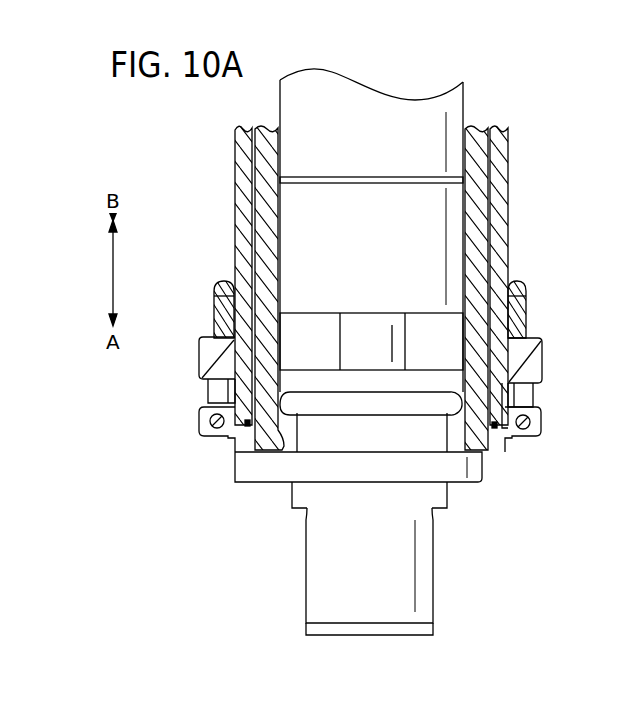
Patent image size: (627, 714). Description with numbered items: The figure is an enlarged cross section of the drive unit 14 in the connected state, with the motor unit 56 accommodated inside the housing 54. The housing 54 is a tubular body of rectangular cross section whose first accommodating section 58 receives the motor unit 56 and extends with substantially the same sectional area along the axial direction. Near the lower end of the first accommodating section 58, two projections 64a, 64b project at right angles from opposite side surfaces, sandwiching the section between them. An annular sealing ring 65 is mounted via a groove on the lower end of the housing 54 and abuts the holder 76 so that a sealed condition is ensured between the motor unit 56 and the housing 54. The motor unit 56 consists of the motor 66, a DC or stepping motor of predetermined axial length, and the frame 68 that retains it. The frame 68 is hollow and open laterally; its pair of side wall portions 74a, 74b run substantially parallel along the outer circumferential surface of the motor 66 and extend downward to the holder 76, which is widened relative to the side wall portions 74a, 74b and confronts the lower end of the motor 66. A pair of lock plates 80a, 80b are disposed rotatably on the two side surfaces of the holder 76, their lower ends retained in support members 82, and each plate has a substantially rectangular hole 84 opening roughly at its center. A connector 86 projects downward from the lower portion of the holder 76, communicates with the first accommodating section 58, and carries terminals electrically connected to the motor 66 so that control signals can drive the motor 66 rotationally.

The drive unit 14 is at (531, 255).
The housing 54 is at (243, 159).
The motor unit 56 is at (473, 100).
The first accommodating section 58 is at (488, 151).
The projection 64a is at (536, 373).
The projection 64b is at (214, 378).
The sealing ring 65 is at (483, 433).
The motor 66 is at (374, 91).
The frame 68 is at (473, 235).
The side wall portion 74a is at (479, 184).
The side wall portion 74b is at (263, 212).
The holder 76 is at (245, 455).
The lock plate 80a is at (518, 283).
The lock plate 80b is at (224, 282).
The support member 82 is at (207, 428).
The hole 84 is at (204, 340).
The connector 86 is at (400, 565).